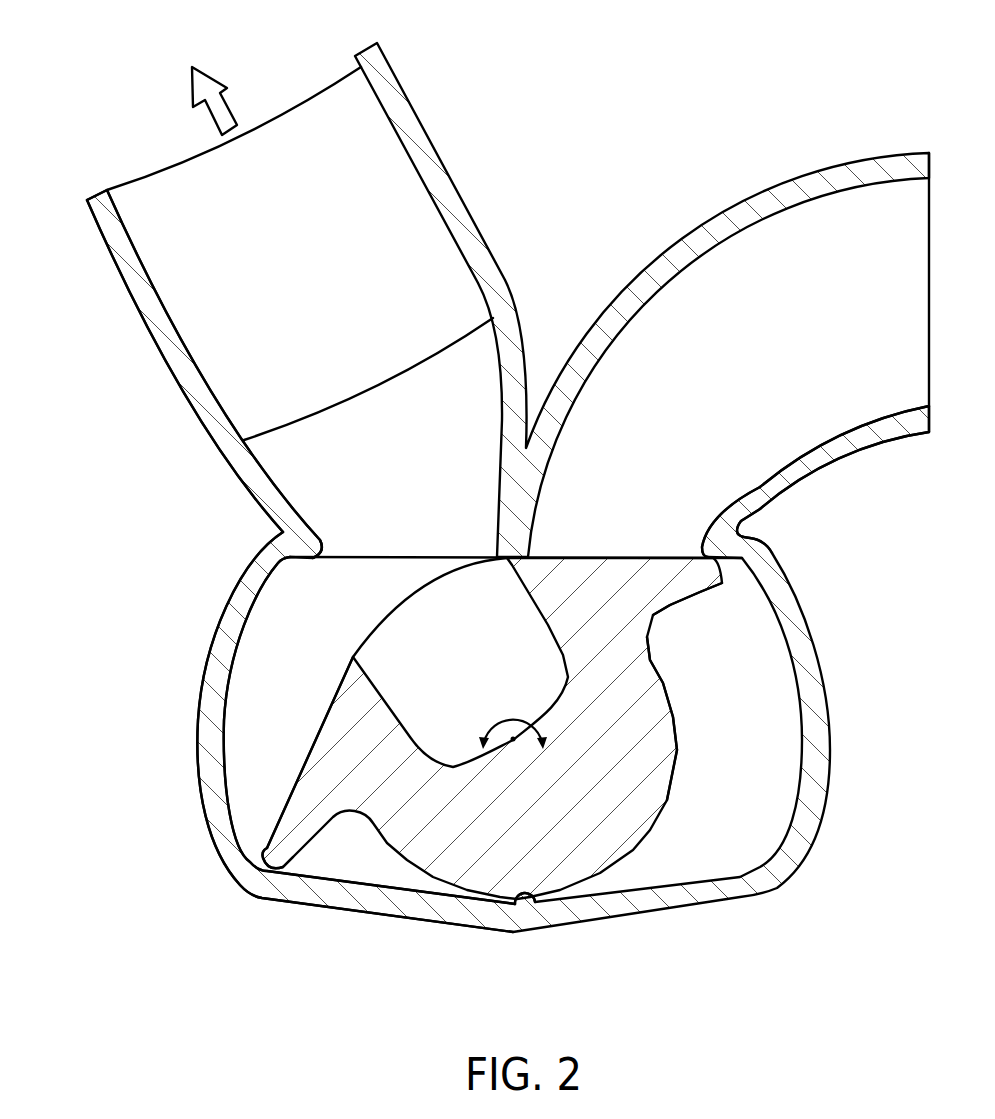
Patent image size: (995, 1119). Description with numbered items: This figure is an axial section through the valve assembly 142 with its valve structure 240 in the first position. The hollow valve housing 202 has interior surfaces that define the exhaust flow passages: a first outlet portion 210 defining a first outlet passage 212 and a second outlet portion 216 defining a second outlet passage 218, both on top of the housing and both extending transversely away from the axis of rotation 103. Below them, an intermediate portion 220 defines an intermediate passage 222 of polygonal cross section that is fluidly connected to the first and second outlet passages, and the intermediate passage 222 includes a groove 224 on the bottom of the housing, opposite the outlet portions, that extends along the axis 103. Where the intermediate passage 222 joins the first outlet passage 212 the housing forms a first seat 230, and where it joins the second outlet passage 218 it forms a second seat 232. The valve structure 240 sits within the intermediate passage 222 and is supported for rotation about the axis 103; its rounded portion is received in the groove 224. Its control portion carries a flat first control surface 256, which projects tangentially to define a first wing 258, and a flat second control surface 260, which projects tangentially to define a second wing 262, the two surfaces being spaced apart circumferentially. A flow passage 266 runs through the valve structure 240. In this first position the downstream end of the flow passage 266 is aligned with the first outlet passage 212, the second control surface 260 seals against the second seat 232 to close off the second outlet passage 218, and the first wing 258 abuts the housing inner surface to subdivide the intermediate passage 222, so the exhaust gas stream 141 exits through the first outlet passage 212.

The axis of rotation 103 is at (513, 741).
The exhaust gas stream 141 is at (204, 78).
The valve assembly 142 is at (125, 105).
The valve housing 202 is at (815, 672).
The first outlet portion 210 is at (178, 352).
The first outlet passage 212 is at (305, 303).
The second outlet portion 216 is at (783, 197).
The second outlet passage 218 is at (782, 355).
The intermediate portion 220 is at (228, 632).
The intermediate passage 222 is at (305, 694).
The groove 224 is at (528, 893).
The first seat 230 is at (303, 560).
The second seat 232 is at (728, 572).
The valve structure 240 is at (652, 724).
The first control surface 256 is at (310, 747).
The first wing 258 is at (290, 835).
The second control surface 260 is at (562, 557).
The second wing 262 is at (673, 580).
The flow passage 266 is at (500, 653).